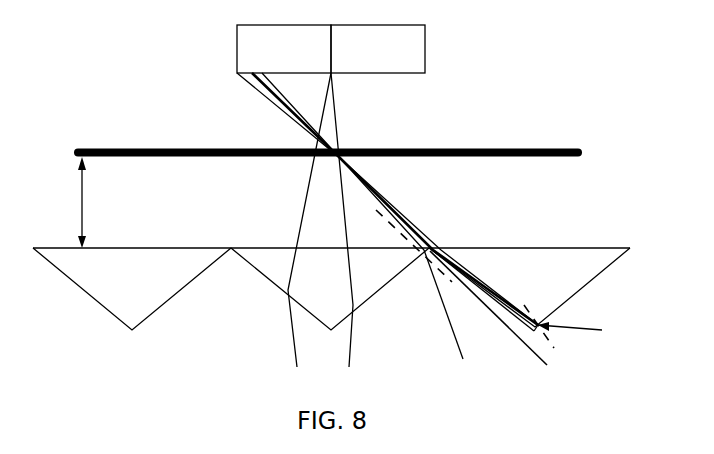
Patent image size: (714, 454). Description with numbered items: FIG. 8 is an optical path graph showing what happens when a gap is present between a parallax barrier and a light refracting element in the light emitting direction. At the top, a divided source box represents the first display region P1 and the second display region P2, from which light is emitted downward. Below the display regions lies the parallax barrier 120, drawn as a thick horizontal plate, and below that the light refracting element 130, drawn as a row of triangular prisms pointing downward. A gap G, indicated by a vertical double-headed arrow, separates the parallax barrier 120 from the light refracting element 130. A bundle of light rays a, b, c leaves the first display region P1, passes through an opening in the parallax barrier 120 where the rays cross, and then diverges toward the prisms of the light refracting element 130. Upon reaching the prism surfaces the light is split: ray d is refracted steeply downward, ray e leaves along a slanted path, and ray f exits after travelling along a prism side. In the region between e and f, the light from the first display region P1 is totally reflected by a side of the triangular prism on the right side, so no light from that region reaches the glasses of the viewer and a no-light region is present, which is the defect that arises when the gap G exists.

The parallax barrier 120 is at (538, 148).
The light refracting element 130 is at (170, 248).
The first display region P1 is at (284, 49).
The second display region P2 is at (378, 49).
The light ray a is at (387, 190).
The light ray b is at (395, 190).
The light ray c is at (343, 152).
The light ray d is at (443, 306).
The light ray e is at (488, 308).
The light ray f is at (570, 318).
The gap G is at (92, 202).